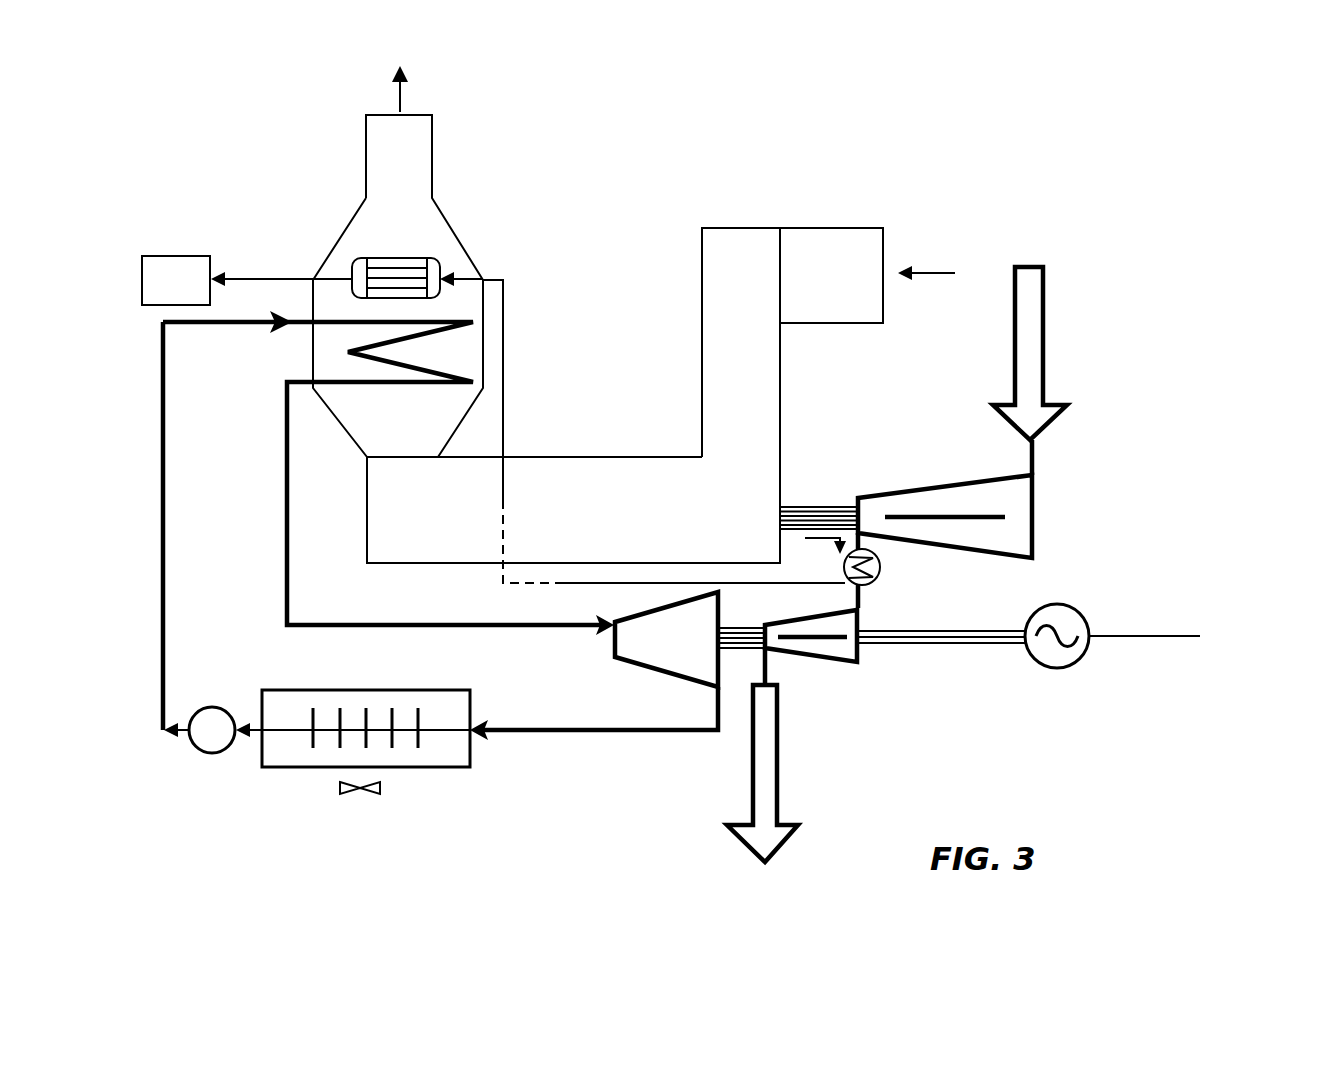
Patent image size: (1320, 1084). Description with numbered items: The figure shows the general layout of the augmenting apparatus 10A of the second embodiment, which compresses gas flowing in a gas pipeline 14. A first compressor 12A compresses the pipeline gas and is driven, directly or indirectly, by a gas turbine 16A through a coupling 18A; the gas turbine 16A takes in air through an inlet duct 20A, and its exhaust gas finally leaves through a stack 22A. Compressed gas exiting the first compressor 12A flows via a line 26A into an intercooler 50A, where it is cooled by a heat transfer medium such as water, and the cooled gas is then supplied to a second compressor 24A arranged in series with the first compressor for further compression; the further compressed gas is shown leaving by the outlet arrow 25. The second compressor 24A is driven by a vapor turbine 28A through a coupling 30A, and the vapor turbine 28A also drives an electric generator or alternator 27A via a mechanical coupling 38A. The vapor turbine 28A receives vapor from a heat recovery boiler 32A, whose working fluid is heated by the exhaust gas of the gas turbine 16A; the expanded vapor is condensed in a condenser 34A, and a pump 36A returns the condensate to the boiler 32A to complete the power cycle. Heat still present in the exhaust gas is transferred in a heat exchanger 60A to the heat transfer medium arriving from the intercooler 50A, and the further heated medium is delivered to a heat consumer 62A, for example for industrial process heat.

The augmenting apparatus 10A is at (1192, 183).
The first compressor 12A is at (1038, 512).
The gas pipeline 14 is at (1045, 367).
The gas turbine 16A is at (572, 456).
The coupling 18A is at (805, 506).
The inlet duct 20A is at (757, 227).
The stack 22A is at (436, 324).
The second compressor 24A is at (858, 625).
The exhaust flow outlet 25 is at (777, 795).
The line 26A is at (866, 541).
The electric generator or alternator 27A is at (1078, 668).
The vapor turbine 28A is at (728, 589).
The coupling 30A is at (742, 652).
The heat recovery boiler 32A is at (330, 320).
The condenser 34A is at (318, 690).
The pump 36A is at (200, 707).
The mechanical coupling 38A is at (925, 645).
The intercooler 50A is at (876, 587).
The heat exchanger 60A is at (352, 262).
The heat consumer 62A is at (162, 256).